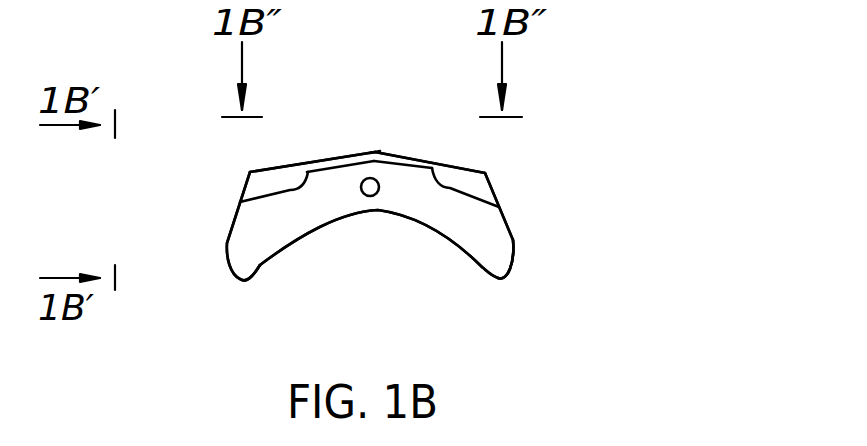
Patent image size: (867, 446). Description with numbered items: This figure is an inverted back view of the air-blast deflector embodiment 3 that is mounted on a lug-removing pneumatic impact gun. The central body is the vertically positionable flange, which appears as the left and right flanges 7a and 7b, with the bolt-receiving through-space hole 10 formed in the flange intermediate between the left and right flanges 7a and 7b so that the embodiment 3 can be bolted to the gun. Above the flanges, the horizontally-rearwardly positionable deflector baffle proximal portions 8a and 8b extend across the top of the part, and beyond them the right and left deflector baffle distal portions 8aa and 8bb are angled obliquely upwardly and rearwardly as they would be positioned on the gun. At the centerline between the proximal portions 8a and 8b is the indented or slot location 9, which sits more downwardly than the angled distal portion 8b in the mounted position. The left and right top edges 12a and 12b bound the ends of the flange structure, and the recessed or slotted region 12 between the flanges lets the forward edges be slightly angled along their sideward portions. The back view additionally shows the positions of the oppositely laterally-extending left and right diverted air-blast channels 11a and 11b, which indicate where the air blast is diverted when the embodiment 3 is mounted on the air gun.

The embodiment 3 is at (558, 218).
The left flange 7a is at (488, 238).
The right flange 7b is at (247, 243).
The deflector baffle proximal portion 8a is at (400, 163).
The deflector baffle proximal portion 8b is at (335, 162).
The deflector baffle distal portion 8aa is at (467, 185).
The deflector baffle distal portion 8bb is at (262, 180).
The slot location 9 is at (375, 153).
The bolt-receiving through-space hole 10 is at (362, 188).
The diverted air-blast channel 11a is at (440, 197).
The diverted air-blast channel 11b is at (295, 192).
The arch recess 12 is at (380, 215).
The left top edge 12a is at (485, 268).
The right top edge 12b is at (263, 262).